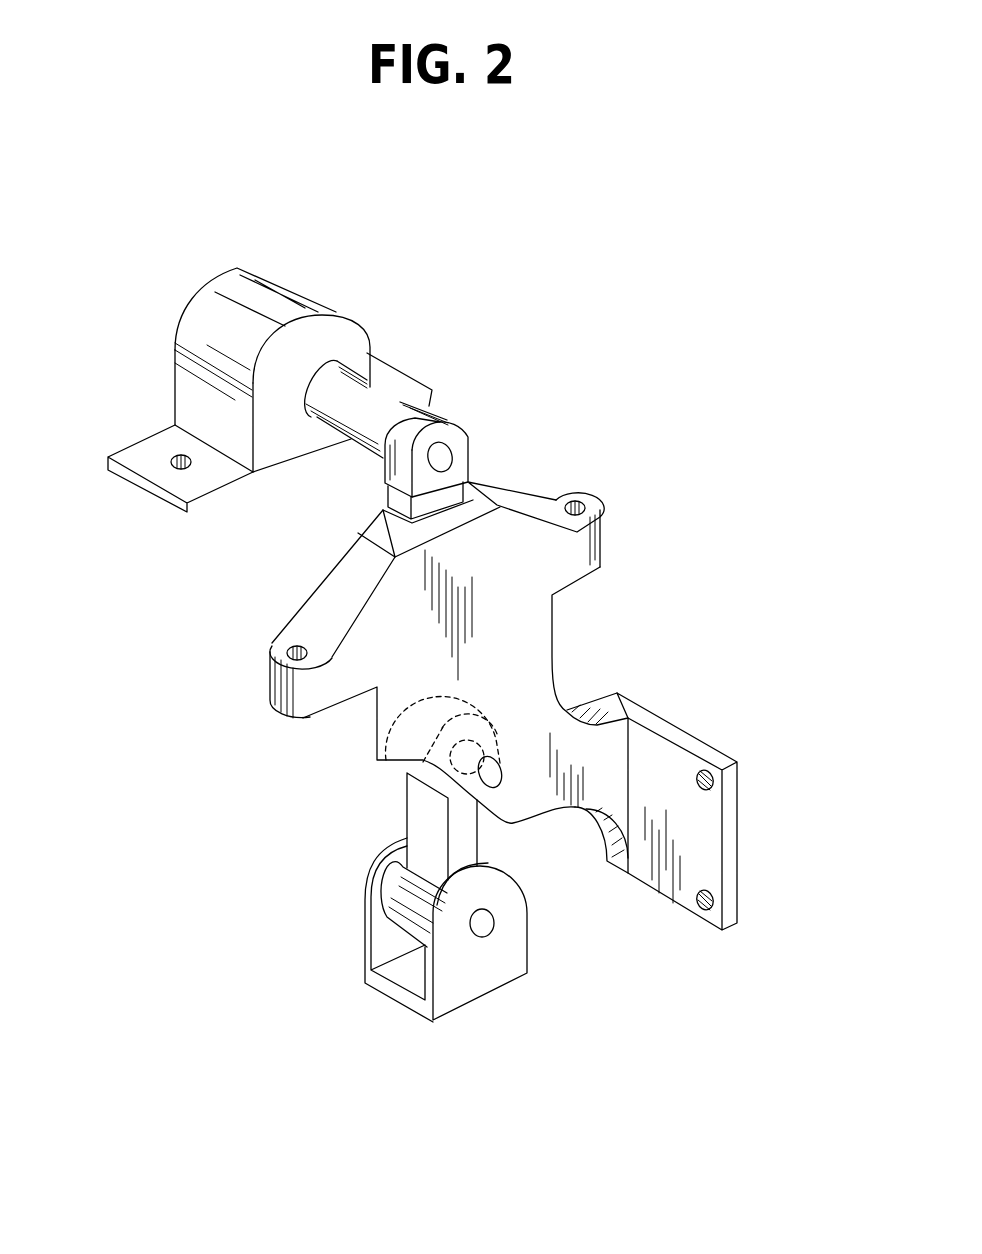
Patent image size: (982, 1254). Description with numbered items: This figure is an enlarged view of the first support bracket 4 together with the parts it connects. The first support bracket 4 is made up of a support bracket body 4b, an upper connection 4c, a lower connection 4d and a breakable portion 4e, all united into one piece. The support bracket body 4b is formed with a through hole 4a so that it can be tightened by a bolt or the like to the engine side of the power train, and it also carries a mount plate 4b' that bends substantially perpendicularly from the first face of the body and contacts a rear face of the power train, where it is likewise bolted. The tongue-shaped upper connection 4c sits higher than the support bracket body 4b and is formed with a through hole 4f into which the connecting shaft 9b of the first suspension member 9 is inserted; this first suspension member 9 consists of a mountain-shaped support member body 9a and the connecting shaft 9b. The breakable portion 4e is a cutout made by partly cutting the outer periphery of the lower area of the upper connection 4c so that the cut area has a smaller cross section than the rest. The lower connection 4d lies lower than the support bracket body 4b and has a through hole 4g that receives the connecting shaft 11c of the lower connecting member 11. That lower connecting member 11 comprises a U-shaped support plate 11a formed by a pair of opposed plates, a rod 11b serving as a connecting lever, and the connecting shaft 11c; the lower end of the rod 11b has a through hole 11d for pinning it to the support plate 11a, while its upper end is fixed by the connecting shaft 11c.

The first suspension member 9 is at (400, 266).
The support member body 9a is at (210, 338).
The connecting shaft 9b is at (363, 412).
The first support bracket 4 is at (700, 568).
The through hole 4a is at (295, 650).
The support bracket body 4b is at (462, 652).
The mount plate 4b' is at (677, 793).
The upper connection 4c is at (455, 441).
The lower connection 4d is at (525, 795).
The breakable portion 4e is at (388, 497).
The through hole 4f is at (443, 457).
The through hole 4g is at (442, 728).
The lower connecting member 11 is at (314, 1006).
The support plate 11a is at (403, 1000).
The rod 11b is at (427, 817).
The connecting shaft 11c is at (397, 767).
The through hole 11d is at (484, 930).